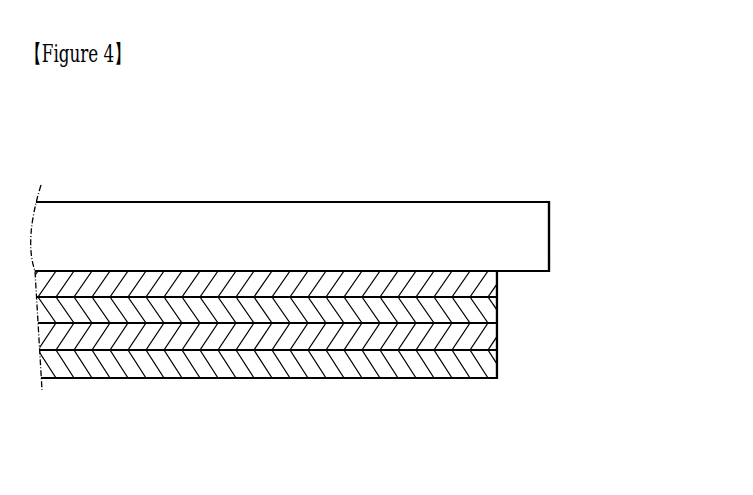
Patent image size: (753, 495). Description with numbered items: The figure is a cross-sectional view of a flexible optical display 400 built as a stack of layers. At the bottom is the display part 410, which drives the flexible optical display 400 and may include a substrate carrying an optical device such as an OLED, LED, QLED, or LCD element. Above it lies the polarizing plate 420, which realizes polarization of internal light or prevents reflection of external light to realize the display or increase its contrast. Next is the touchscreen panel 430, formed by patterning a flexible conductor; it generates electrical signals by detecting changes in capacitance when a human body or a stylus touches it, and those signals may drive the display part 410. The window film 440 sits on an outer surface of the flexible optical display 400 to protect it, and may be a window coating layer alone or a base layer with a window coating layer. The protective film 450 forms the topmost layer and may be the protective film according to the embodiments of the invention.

The flexible optical display 400 is at (458, 203).
The display part 410 is at (486, 363).
The polarizing plate 420 is at (486, 337).
The touchscreen panel 430 is at (486, 314).
The window film 440 is at (486, 289).
The protective film 450 is at (540, 233).